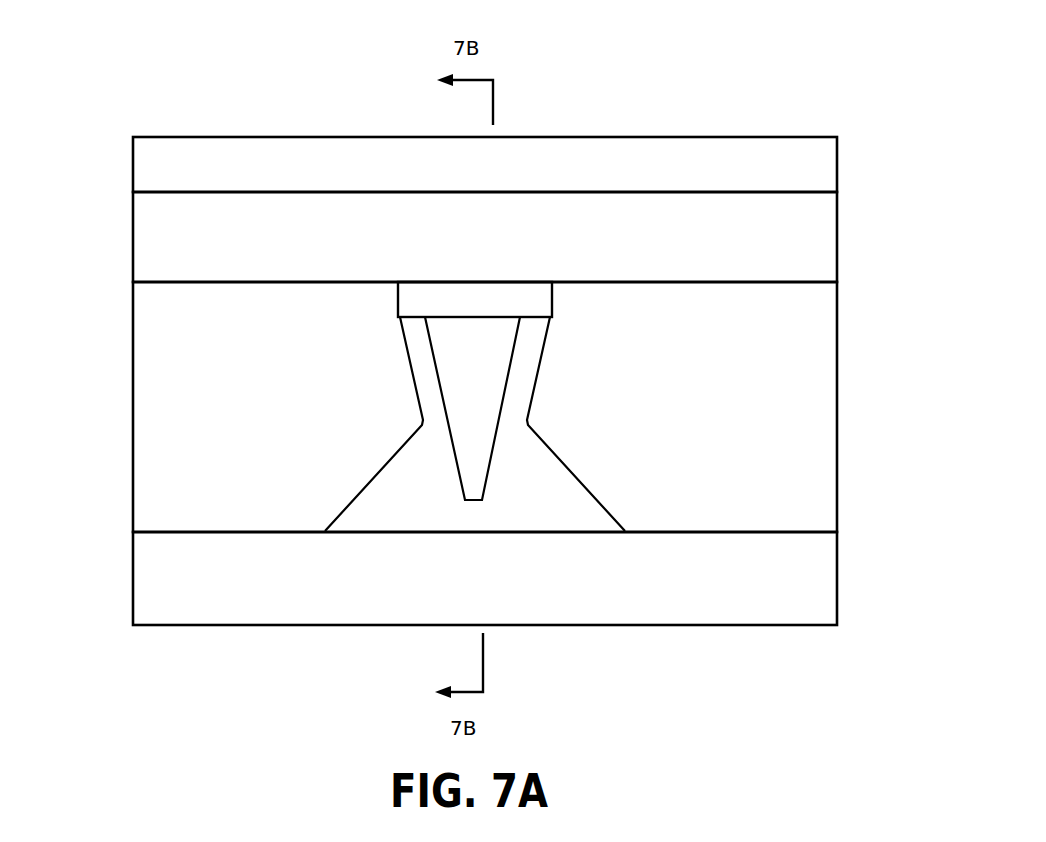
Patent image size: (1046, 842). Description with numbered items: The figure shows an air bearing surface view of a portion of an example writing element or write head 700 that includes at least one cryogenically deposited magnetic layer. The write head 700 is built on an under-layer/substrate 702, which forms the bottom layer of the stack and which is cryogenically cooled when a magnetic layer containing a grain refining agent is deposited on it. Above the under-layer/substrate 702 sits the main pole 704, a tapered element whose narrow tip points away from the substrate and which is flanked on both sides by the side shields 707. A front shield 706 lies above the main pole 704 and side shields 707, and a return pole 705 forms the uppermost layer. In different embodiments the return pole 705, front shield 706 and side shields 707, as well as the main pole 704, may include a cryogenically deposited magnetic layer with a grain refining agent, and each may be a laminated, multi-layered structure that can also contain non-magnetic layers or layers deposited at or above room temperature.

The write head 700 is at (113, 115).
The under-layer/substrate 702 is at (750, 593).
The main pole 704 is at (483, 335).
The return pole 705 is at (750, 170).
The front shield 706 is at (750, 252).
The side shields 707 is at (253, 388).